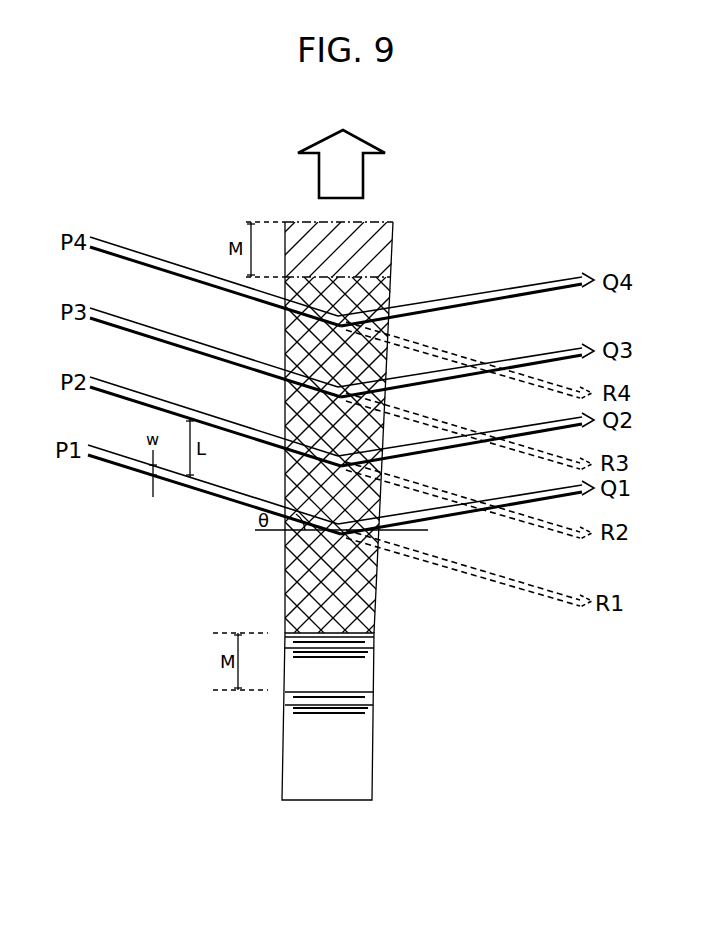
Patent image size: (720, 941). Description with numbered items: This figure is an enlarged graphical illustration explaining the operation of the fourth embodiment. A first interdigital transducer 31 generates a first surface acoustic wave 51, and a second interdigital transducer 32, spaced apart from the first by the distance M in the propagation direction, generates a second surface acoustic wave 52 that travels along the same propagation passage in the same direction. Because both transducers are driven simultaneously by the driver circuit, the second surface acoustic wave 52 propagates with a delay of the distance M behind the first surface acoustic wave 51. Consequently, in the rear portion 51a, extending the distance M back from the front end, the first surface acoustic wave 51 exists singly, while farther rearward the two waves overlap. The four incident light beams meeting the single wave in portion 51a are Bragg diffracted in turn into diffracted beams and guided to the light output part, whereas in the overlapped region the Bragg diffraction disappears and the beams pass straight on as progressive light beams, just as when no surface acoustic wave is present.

The rear portion of the first surface acoustic wave 51a is at (383, 250).
The first surface acoustic wave 51 is at (360, 427).
The second surface acoustic wave 52 is at (378, 292).
The first interdigital transducer 31 is at (378, 650).
The second interdigital transducer 32 is at (378, 705).